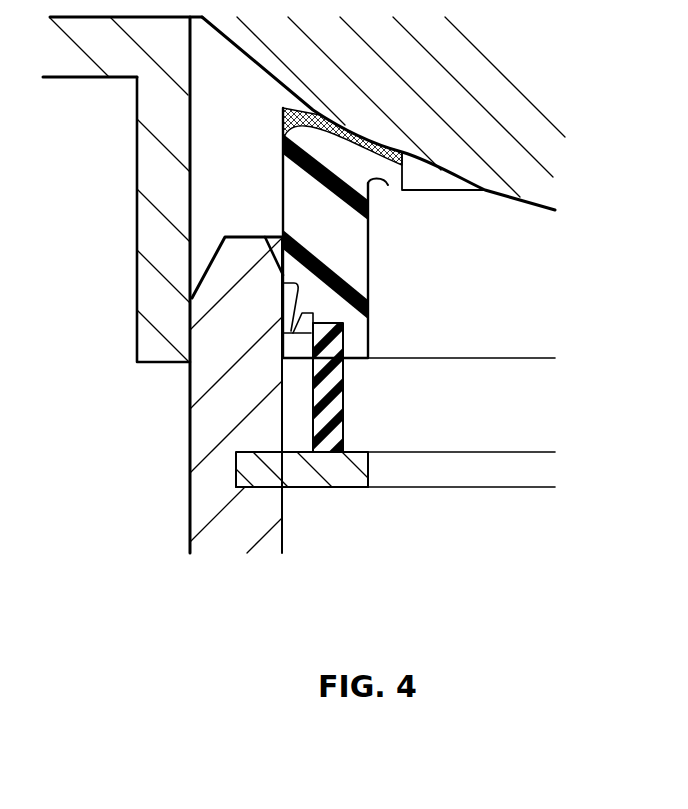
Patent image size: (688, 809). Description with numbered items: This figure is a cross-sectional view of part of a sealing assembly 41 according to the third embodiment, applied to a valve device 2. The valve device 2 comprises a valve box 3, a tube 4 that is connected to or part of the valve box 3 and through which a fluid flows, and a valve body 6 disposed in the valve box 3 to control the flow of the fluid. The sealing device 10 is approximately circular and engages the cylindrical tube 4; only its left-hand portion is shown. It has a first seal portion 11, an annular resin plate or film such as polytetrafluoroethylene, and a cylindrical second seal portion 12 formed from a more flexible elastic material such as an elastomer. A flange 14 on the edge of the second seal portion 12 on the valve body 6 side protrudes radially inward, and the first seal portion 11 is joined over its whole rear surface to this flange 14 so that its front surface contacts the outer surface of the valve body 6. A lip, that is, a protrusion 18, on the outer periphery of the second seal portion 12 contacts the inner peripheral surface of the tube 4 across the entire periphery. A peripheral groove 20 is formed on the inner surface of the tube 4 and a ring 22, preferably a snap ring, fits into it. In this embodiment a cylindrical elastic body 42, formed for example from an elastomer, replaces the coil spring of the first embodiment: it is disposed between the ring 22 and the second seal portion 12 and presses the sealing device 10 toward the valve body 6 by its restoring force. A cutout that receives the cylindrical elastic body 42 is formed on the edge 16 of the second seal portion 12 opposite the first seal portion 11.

The valve device 2 is at (113, 203).
The valve box 3 is at (66, 78).
The tube 4 is at (205, 430).
The valve body 6 is at (260, 62).
The sealing device 10 is at (377, 233).
The first seal portion 11 is at (283, 122).
The second seal portion 12 is at (370, 276).
The flange 14 is at (388, 185).
The edge 16 is at (370, 344).
The protrusion 18 is at (280, 302).
The peripheral groove 20 is at (238, 468).
The ring 22 is at (343, 478).
The sealing assembly 41 is at (538, 528).
The cylindrical elastic body 42 is at (344, 388).